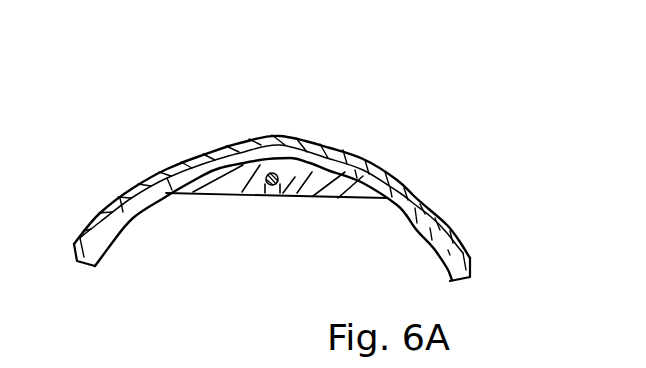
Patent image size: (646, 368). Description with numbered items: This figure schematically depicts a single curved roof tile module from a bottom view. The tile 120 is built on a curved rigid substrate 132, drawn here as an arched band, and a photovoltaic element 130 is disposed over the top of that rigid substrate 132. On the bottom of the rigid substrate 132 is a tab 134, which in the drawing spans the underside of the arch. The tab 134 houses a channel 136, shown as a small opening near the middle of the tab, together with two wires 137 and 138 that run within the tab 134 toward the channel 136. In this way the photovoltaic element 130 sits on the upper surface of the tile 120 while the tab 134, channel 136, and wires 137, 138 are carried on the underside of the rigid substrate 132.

The tile 120 is at (522, 109).
The photovoltaic element 130 is at (282, 137).
The rigid substrate 132 is at (130, 185).
The tab 134 is at (221, 205).
The channel 136 is at (290, 205).
The wire 137 is at (283, 160).
The wire 138 is at (300, 150).